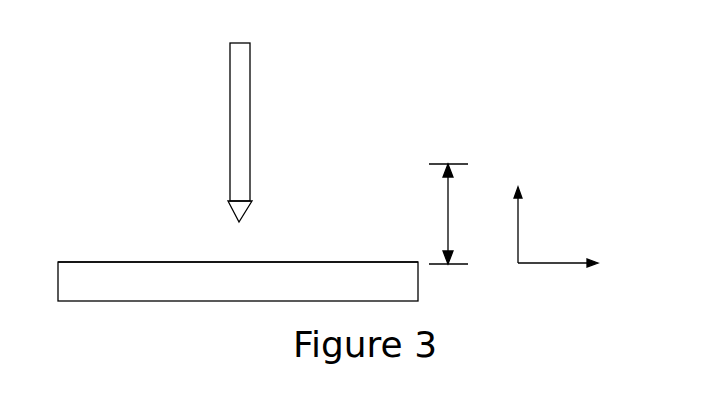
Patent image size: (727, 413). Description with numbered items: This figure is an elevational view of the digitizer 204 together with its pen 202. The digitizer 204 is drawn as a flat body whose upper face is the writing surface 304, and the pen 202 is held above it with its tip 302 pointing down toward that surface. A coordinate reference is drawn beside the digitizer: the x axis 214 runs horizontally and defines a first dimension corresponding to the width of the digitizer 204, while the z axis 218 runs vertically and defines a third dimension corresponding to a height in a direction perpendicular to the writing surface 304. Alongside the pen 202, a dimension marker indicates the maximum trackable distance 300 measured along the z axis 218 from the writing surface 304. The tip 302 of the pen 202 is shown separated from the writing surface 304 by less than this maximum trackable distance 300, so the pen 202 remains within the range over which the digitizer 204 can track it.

The pen 202 is at (239, 123).
The tip 302 is at (242, 209).
The digitizer 204 is at (251, 291).
The writing surface 304 is at (179, 262).
The maximum trackable distance 300 is at (459, 214).
The z axis 218 is at (519, 206).
The x axis 214 is at (573, 265).